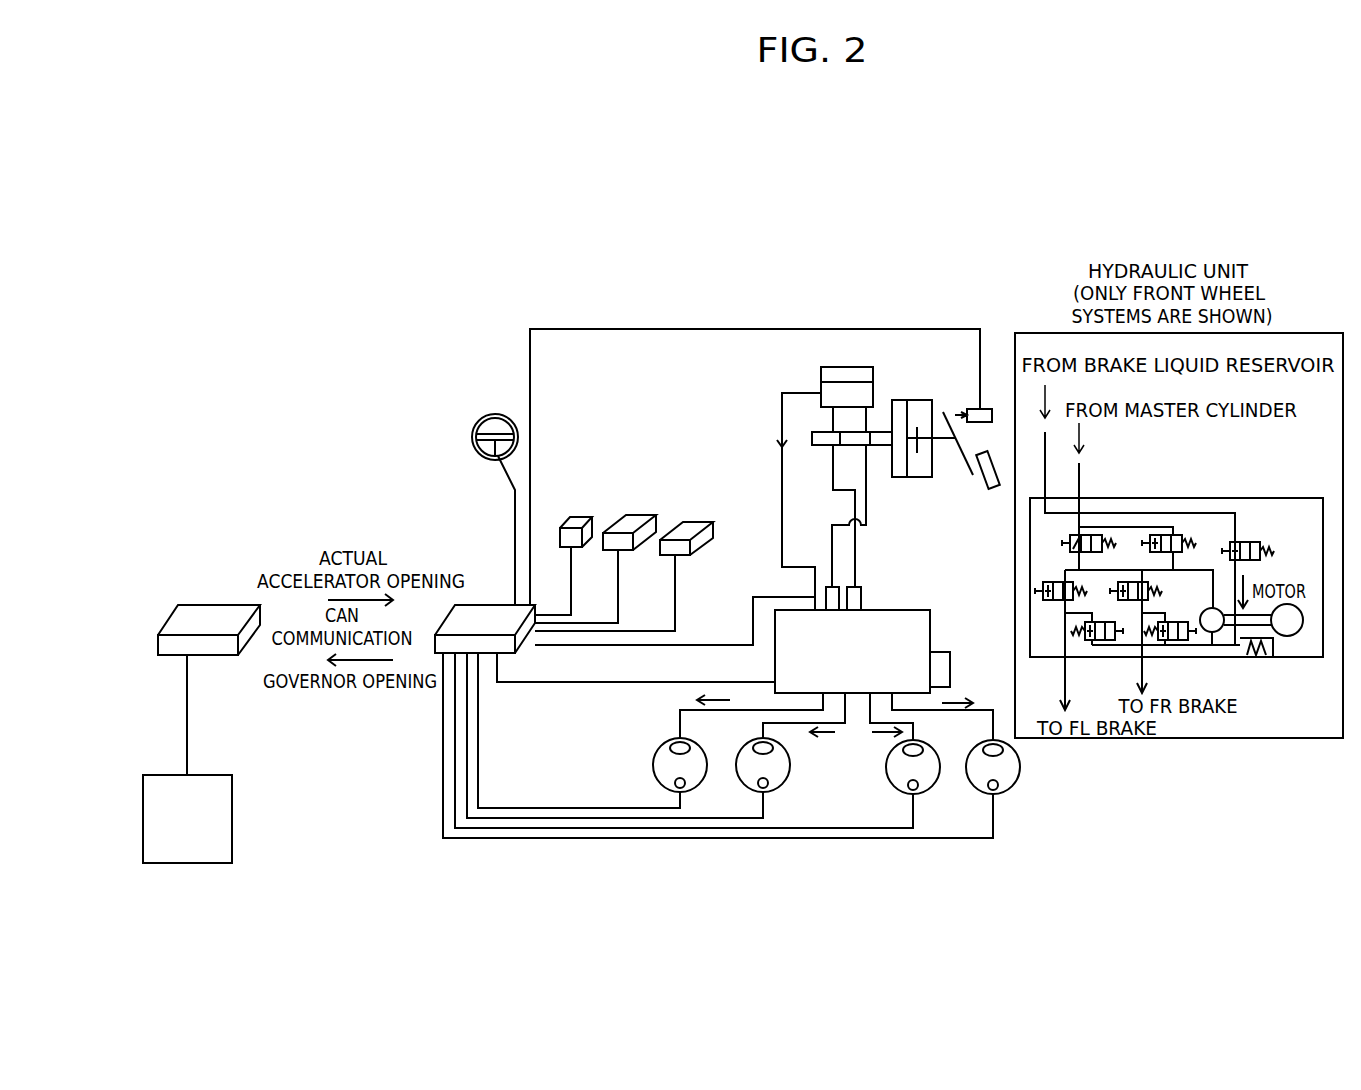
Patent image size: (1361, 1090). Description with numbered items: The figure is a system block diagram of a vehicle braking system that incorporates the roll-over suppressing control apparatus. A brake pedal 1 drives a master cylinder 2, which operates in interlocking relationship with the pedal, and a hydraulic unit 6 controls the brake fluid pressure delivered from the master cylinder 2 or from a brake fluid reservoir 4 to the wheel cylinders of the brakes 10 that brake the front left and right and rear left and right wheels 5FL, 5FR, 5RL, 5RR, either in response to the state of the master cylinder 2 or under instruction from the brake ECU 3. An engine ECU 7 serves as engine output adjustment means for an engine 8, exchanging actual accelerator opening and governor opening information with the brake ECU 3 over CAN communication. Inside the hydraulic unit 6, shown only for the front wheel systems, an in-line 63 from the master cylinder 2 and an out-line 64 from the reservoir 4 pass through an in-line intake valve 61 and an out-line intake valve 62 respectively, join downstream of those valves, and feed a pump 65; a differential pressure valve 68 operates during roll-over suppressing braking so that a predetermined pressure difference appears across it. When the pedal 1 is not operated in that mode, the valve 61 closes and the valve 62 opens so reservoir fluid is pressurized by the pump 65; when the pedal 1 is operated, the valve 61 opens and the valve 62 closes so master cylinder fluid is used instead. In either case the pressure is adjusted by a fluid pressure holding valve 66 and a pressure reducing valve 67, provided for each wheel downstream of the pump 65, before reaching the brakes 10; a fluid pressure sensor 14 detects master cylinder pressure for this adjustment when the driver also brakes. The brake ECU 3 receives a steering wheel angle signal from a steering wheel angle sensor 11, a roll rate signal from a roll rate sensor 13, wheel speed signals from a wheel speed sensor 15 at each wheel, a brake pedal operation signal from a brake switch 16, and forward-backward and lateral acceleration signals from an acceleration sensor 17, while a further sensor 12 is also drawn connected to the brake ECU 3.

The brake pedal 1 is at (993, 490).
The master cylinder 2 is at (875, 447).
The brake ECU 3 is at (515, 655).
The brake fluid reservoir 4 is at (821, 372).
The front left wheel 5FL is at (632, 772).
The front right wheel 5FR is at (799, 783).
The rear left wheel 5RL is at (887, 793).
The rear right wheel 5RR is at (1028, 795).
The hydraulic unit 6 is at (915, 610).
The engine ECU 7 is at (210, 655).
The engine 8 is at (232, 820).
The wheel brake 10 is at (675, 742).
The steering wheel angle sensor 11 is at (472, 422).
The yaw rate sensor 12 is at (632, 523).
The roll rate sensor 13 is at (695, 530).
The fluid pressure sensor 14 is at (861, 597).
The wheel speed sensor 15 is at (675, 786).
The brake switch 16 is at (987, 409).
The forward-backward and lateral acceleration sensor 17 is at (573, 520).
The in-line intake valve 61 is at (1158, 525).
The out-line intake valve 62 is at (1245, 542).
The in-line 63 is at (835, 490).
The out-line 64 is at (782, 410).
The pump 65 is at (1208, 632).
The fluid pressure holding valve 66 is at (1055, 602).
The pressure reducing valve 67 is at (1095, 642).
The differential pressure valve 68 is at (1090, 533).